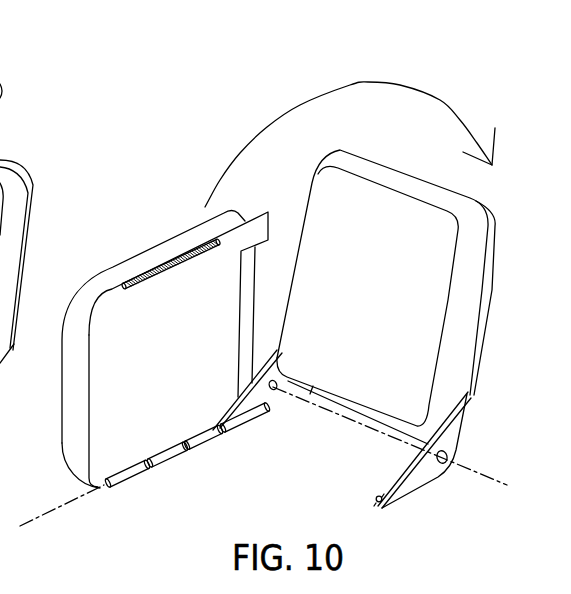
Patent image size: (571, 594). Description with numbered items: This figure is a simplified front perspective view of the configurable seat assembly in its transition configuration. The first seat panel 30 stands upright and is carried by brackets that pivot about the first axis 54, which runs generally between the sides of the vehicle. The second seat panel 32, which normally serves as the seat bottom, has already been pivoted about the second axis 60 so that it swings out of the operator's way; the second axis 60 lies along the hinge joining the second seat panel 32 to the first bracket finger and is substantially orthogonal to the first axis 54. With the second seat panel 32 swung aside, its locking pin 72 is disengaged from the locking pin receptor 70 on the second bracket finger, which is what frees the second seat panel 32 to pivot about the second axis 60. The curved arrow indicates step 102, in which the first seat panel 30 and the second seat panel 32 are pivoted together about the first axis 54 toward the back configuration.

The first seat panel 30 is at (415, 187).
The second seat panel 32 is at (77, 413).
The first axis 54 is at (448, 461).
The second axis 60 is at (52, 515).
The locking pin receptor 70 is at (380, 496).
The locking pin 72 is at (162, 268).
The step 102 is at (368, 80).